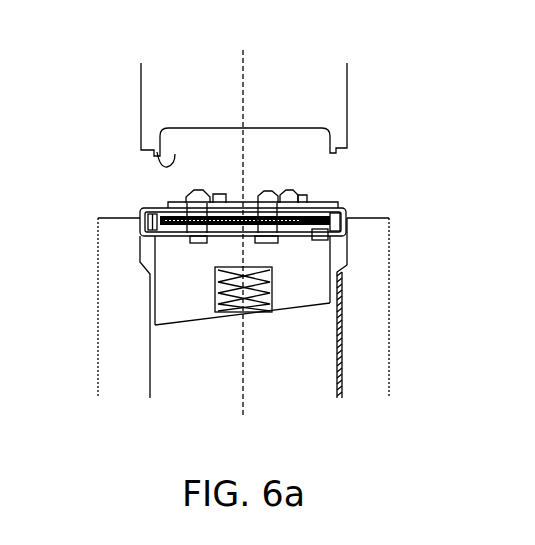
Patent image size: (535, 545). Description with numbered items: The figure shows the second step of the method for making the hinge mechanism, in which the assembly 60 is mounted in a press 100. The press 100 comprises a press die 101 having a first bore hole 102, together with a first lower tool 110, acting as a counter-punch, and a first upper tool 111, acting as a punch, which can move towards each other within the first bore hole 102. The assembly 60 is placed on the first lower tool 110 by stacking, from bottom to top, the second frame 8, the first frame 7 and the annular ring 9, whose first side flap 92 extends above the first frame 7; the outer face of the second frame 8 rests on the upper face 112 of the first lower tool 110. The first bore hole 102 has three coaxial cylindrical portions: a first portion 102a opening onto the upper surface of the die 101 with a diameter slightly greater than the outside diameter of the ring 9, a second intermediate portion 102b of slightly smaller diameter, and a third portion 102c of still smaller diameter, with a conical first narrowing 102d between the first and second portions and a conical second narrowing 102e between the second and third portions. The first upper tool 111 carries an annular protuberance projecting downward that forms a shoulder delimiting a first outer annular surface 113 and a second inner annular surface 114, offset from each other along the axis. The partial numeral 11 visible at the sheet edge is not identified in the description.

The press 100 is at (221, 253).
The first upper tool 111 is at (325, 90).
The first outer annular surface 113 is at (148, 150).
The second inner annular surface 114 is at (175, 154).
The assembly 60 is at (247, 207).
The first side flap 92 is at (152, 212).
The first frame 7 is at (308, 203).
The second frame 8 is at (294, 232).
The annular ring 9 is at (360, 195).
The upper face 112 is at (172, 234).
The first bore hole 102 is at (250, 304).
The first portion 102a is at (140, 229).
The second intermediate portion 102b is at (140, 255).
The third portion 102c is at (150, 357).
The first narrowing 102d is at (347, 247).
The second narrowing 102e is at (340, 270).
The first lower tool 110 is at (177, 309).
The press die 101 is at (117, 376).
The housing 11 is at (523, 172).